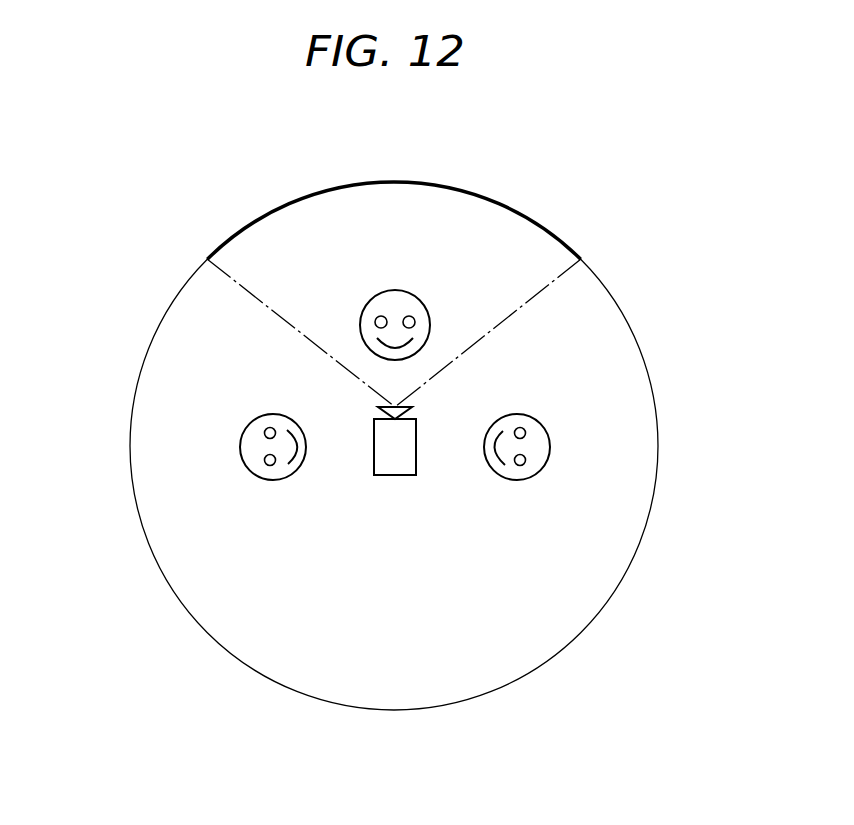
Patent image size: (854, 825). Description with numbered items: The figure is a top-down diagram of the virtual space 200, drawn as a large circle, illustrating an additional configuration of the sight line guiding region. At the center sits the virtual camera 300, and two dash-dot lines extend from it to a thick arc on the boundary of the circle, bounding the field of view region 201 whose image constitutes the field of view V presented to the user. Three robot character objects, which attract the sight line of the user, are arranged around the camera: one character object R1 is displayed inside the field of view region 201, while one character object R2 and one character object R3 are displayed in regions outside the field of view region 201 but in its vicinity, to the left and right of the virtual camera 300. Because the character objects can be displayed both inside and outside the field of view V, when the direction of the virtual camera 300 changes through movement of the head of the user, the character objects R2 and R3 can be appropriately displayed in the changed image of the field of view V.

The virtual space 200 is at (152, 348).
The field of view region 201 is at (409, 220).
The field of view V is at (540, 223).
The virtual camera 300 is at (416, 453).
The character object R1 is at (423, 305).
The character object R2 is at (240, 452).
The character object R3 is at (549, 432).